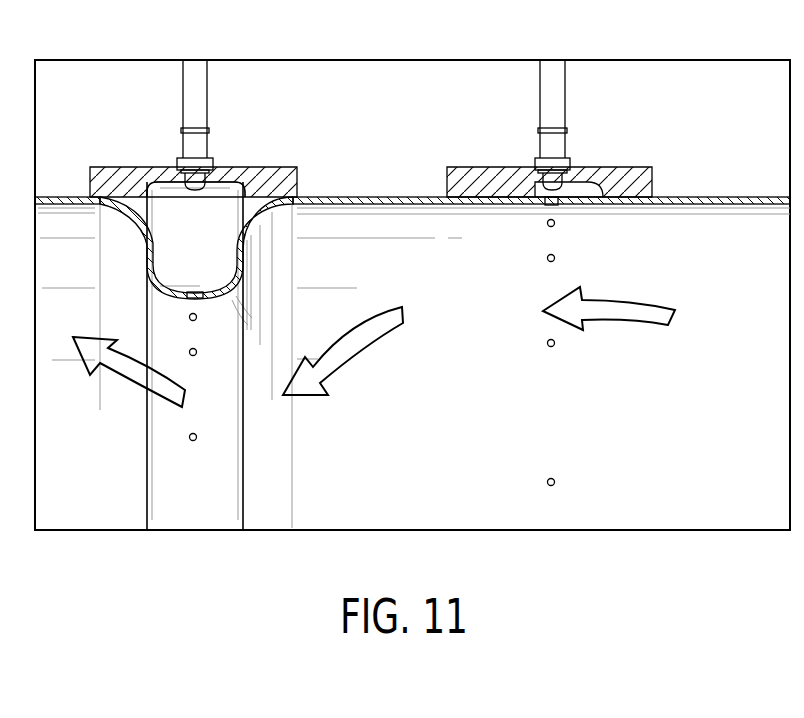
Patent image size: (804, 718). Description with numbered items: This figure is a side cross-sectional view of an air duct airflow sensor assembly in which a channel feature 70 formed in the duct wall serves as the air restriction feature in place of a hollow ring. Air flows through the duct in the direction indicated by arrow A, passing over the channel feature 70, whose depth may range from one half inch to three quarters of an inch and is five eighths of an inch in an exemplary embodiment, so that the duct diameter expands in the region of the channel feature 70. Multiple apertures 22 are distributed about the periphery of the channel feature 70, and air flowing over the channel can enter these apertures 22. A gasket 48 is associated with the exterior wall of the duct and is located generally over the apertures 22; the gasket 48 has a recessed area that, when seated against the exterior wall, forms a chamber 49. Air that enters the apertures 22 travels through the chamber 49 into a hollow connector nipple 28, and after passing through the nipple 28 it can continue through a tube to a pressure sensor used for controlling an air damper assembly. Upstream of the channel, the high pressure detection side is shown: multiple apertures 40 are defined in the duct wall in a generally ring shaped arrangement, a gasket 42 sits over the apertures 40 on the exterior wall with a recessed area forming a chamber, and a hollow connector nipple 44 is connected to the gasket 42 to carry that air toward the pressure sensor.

The apertures 22 is at (192, 297).
The hollow connector nipple 28 is at (187, 146).
The apertures 40 is at (555, 204).
The gasket 42 is at (497, 186).
The hollow connector nipple 44 is at (557, 146).
The gasket 48 is at (255, 187).
The chamber 49 is at (220, 208).
The channel feature 70 is at (203, 278).
The direction of airflow A is at (635, 318).